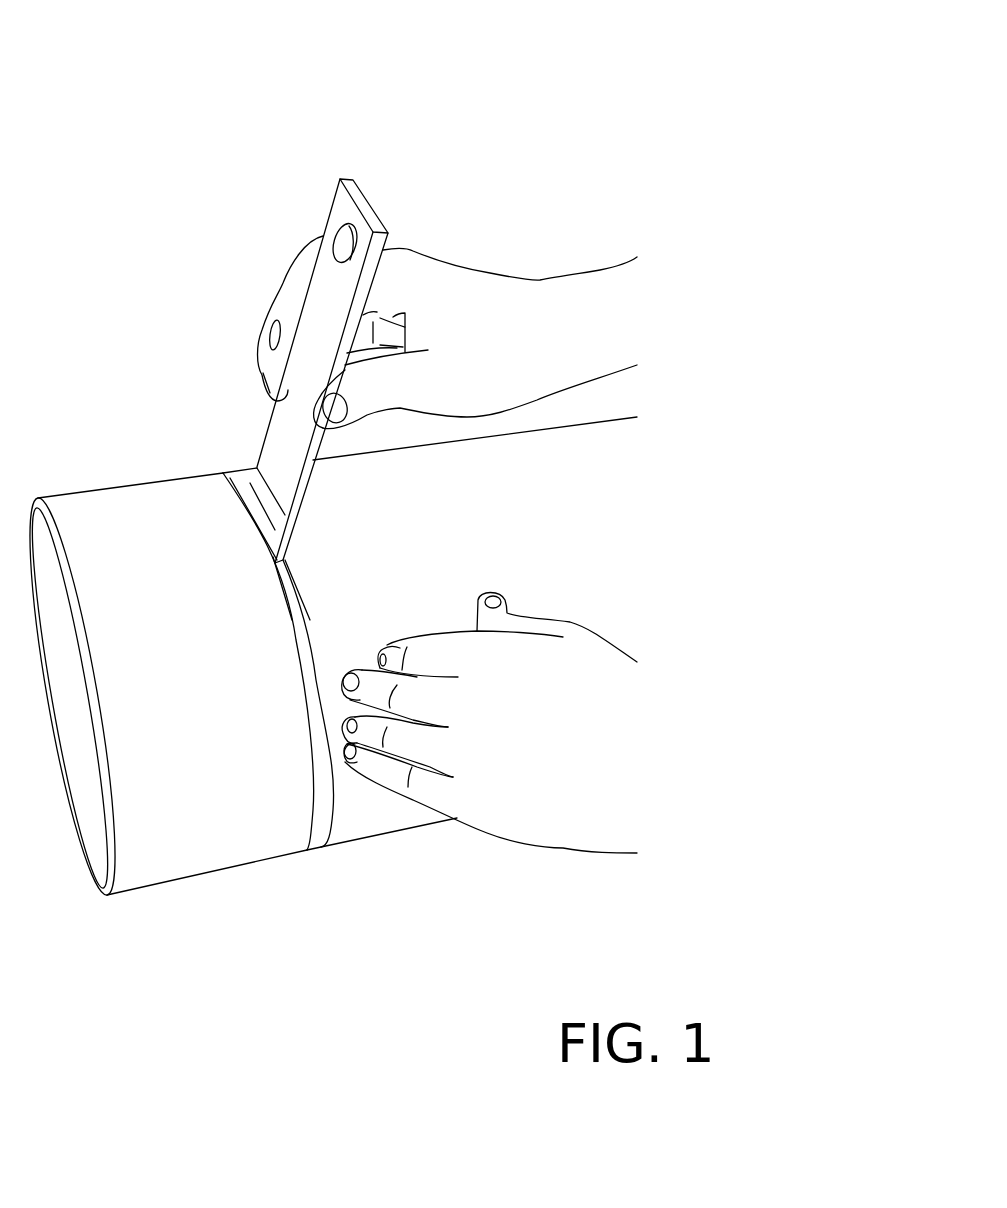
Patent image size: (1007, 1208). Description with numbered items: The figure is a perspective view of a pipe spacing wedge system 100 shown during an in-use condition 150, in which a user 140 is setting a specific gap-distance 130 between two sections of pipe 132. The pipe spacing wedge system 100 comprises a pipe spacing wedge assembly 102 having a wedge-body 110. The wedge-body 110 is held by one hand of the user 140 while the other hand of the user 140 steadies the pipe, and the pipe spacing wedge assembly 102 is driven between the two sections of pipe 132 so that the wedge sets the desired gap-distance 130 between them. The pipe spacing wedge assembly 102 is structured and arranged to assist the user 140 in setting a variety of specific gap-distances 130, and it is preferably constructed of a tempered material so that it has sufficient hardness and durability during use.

The pipe spacing wedge system 100 is at (448, 97).
The pipe spacing wedge assembly 102 is at (485, 127).
The wedge-body 110 is at (267, 192).
The specific gap-distance 130 is at (232, 472).
The section of pipe 132 is at (190, 584).
The user 140 is at (513, 351).
The in-use condition 150 is at (525, 165).